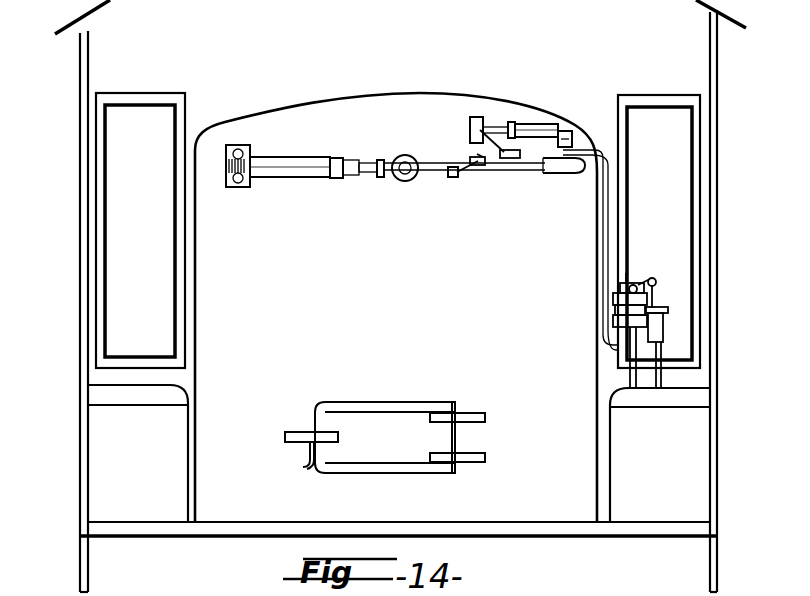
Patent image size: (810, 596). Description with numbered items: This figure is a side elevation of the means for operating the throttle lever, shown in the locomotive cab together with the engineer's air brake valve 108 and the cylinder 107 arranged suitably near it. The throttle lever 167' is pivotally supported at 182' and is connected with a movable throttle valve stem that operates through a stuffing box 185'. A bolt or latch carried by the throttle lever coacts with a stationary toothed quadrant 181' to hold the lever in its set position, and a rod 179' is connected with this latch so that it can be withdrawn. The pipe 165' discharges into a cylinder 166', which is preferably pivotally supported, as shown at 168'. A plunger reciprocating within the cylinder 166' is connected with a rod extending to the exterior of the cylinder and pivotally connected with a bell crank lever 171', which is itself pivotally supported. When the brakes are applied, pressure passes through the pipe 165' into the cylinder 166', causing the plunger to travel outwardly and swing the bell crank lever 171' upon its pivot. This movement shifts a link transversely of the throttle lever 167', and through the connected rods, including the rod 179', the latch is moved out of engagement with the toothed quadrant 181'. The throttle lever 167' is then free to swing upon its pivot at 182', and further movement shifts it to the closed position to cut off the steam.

The pipe 165' is at (563, 250).
The pivotal support 182' is at (251, 137).
The stationary toothed quadrant 181' is at (313, 152).
The throttle lever 167' is at (381, 149).
The stuffing box 185' is at (403, 184).
The rod 179' is at (484, 197).
The bell crank lever 171' is at (495, 105).
The cylinder 166' is at (546, 112).
The pivotal support of cylinder 168' is at (580, 124).
The engineer's air brake valve 108 is at (613, 312).
The cylinder 107 is at (668, 330).